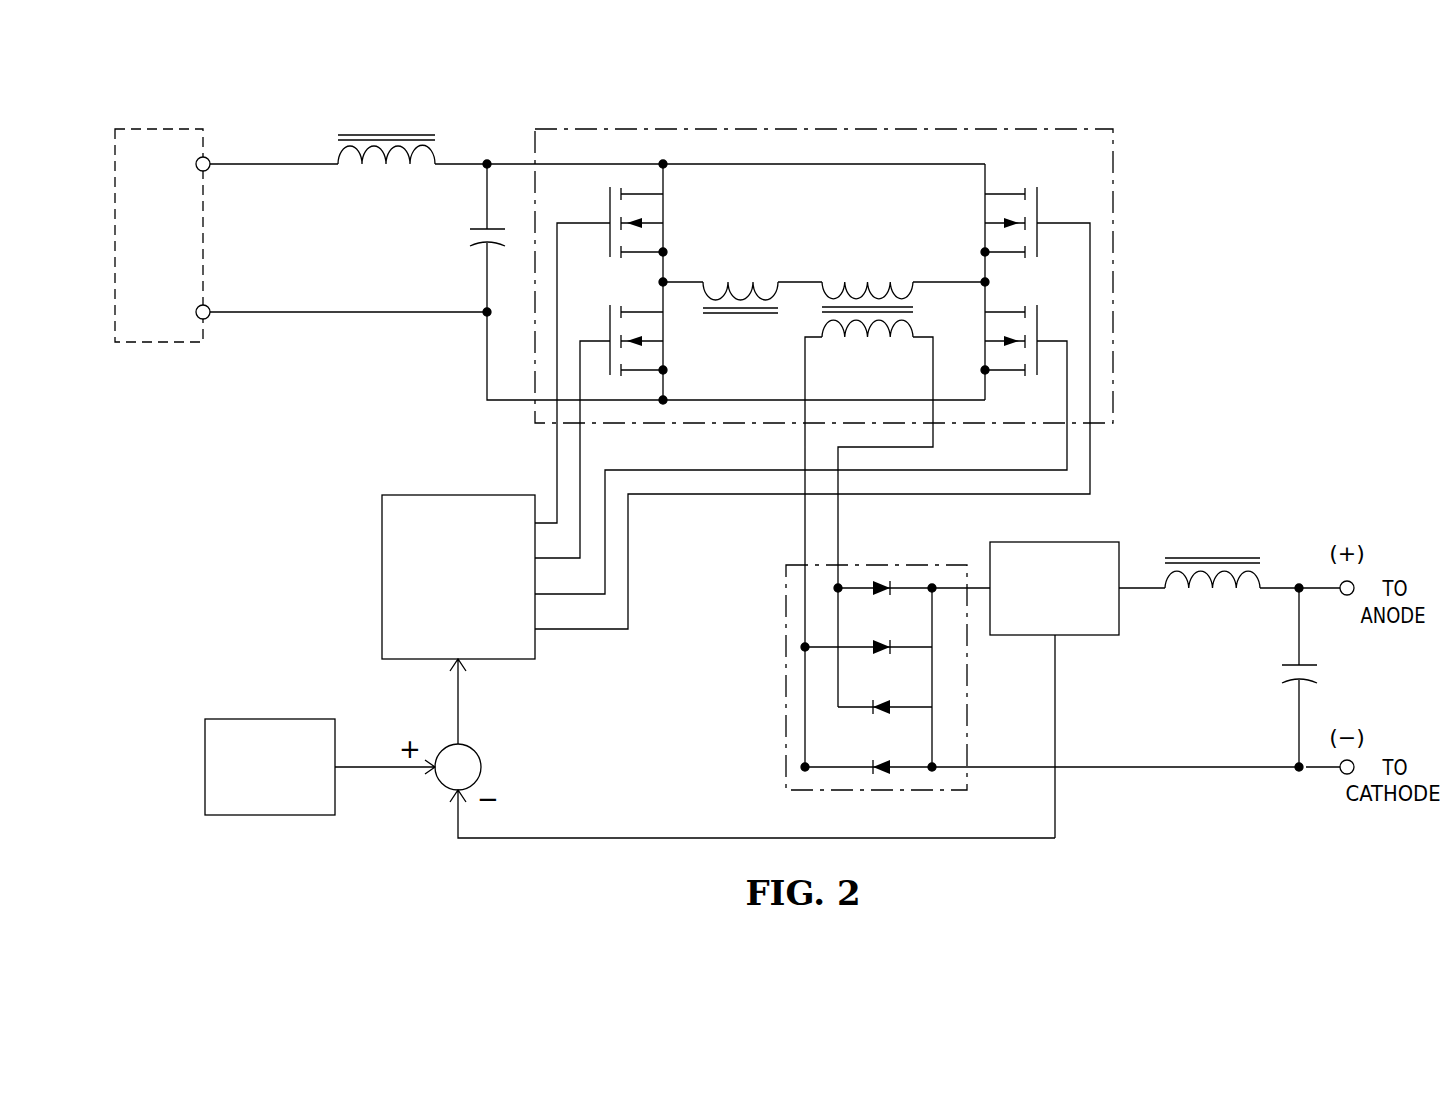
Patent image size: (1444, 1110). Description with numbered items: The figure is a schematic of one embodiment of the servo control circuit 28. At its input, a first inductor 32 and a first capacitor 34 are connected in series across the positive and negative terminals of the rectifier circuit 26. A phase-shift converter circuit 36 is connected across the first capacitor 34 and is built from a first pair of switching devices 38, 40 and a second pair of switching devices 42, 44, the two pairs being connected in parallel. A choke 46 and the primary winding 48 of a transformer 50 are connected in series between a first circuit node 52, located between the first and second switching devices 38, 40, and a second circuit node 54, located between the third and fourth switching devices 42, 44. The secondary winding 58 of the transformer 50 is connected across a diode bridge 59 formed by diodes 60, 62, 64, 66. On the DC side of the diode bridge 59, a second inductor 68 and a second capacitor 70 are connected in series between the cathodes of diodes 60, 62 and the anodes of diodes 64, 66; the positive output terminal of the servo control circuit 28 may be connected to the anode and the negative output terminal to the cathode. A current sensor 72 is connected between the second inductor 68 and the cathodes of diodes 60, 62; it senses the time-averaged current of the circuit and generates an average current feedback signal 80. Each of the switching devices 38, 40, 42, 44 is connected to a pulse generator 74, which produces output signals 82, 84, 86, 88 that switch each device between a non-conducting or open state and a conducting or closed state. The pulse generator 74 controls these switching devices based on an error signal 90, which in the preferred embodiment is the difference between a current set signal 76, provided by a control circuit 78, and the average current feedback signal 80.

The rectifier circuit 26 is at (157, 346).
The servo control circuit 28 is at (183, 82).
The first inductor 32 is at (362, 168).
The first capacitor 34 is at (486, 244).
The phase-shift converter circuit 36 is at (738, 122).
The first switching device 38 is at (663, 190).
The second switching device 40 is at (663, 354).
The third switching device 42 is at (985, 190).
The fourth switching device 44 is at (985, 356).
The choke 46 is at (726, 280).
The primary winding 48 is at (896, 280).
The transformer 50 is at (836, 268).
The first circuit node 52 is at (661, 282).
The second circuit node 54 is at (988, 282).
The secondary winding 58 is at (858, 340).
The diode bridge 59 is at (778, 674).
The diode 60 is at (918, 592).
The diode 62 is at (910, 649).
The diode 64 is at (918, 705).
The diode 66 is at (918, 765).
The second inductor 68 is at (1186, 592).
The second capacitor 70 is at (1296, 680).
The current sensor 72 is at (1066, 542).
The pulse generator 74 is at (382, 575).
The current set signal 76 is at (386, 770).
The control circuit 78 is at (205, 767).
The average current feedback signal 80 is at (648, 836).
The output signal 82 is at (557, 453).
The output signal 84 is at (580, 453).
The output signal 86 is at (703, 470).
The output signal 88 is at (703, 494).
The error signal 90 is at (460, 700).